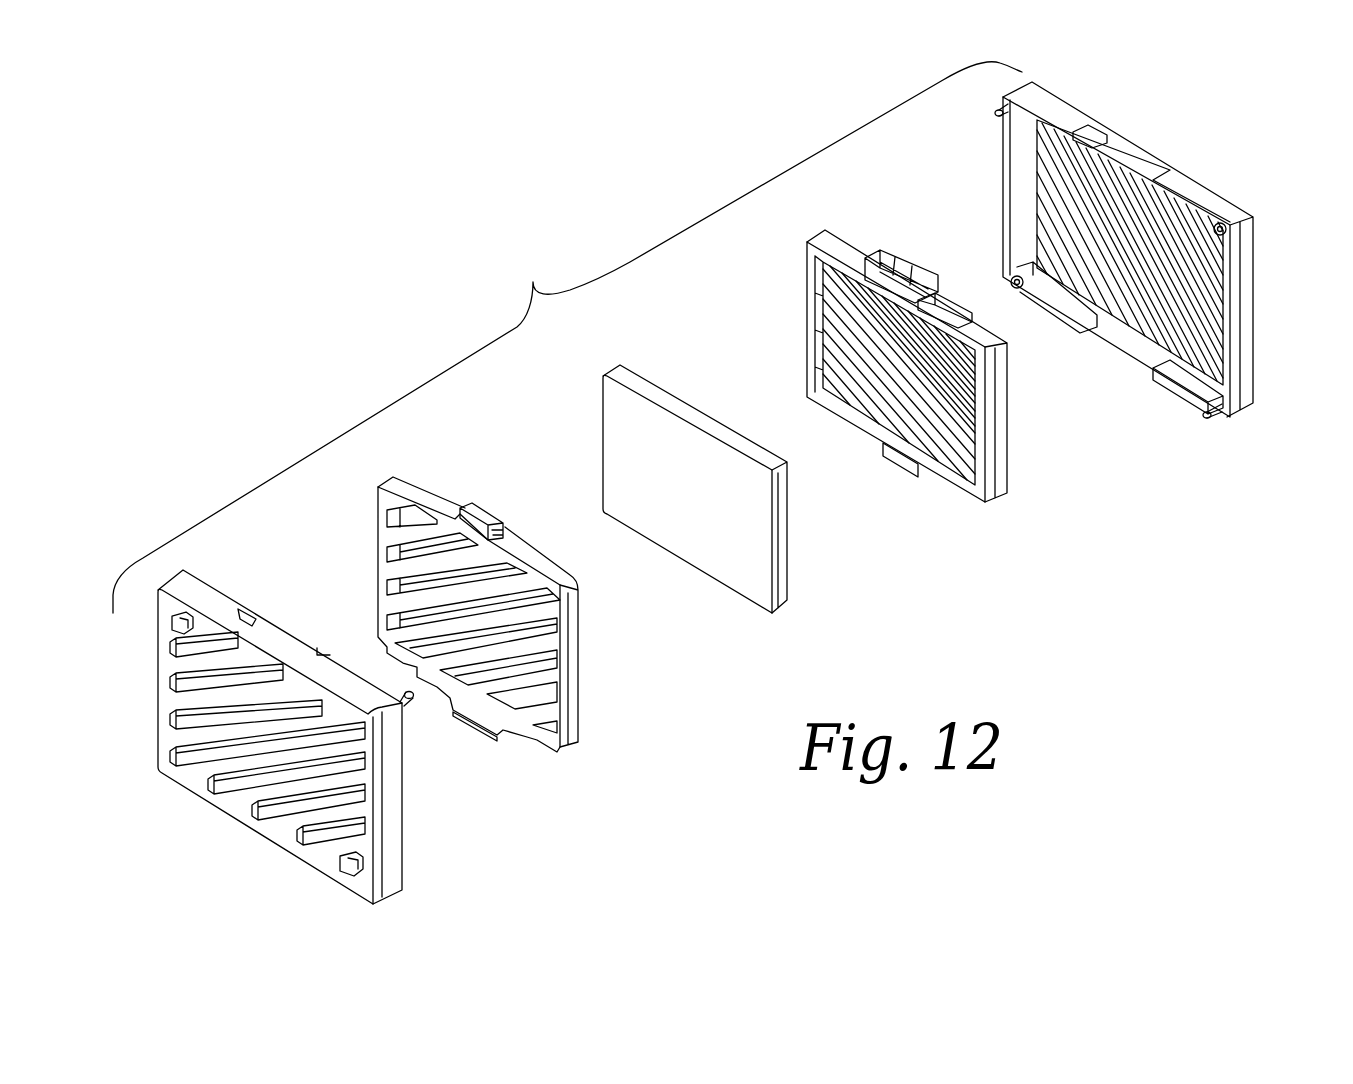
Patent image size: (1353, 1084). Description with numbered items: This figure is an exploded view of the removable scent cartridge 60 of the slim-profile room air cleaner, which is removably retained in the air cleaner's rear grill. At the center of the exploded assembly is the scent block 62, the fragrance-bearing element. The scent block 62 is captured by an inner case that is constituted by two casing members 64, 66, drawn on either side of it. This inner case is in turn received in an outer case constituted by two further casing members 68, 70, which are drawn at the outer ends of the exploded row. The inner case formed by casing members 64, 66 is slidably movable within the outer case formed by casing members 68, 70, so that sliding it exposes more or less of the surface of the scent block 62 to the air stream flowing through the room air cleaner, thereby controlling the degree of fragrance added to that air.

The scent cartridge 60 is at (567, 337).
The scent block 62 is at (776, 614).
The casing member 64 is at (562, 748).
The casing member 66 is at (993, 499).
The casing member 68 is at (290, 843).
The casing member 70 is at (1237, 407).